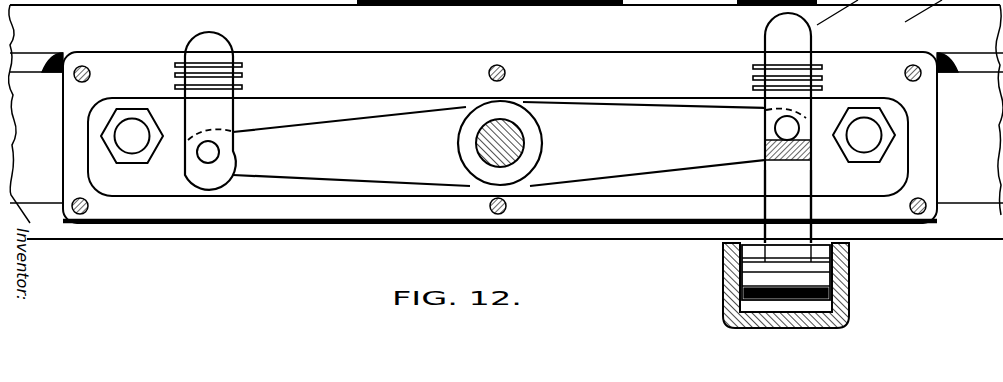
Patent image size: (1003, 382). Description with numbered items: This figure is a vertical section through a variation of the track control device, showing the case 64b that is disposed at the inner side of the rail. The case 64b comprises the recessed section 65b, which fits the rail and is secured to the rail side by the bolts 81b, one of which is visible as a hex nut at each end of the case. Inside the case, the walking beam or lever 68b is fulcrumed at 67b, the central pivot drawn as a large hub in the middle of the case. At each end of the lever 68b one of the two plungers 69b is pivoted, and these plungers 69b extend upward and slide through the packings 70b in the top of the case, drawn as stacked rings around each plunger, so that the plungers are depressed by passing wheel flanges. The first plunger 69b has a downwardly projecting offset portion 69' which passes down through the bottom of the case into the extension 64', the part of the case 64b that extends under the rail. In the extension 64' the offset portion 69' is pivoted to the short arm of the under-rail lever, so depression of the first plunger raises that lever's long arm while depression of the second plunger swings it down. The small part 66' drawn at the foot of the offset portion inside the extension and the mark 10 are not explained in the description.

The case 64b is at (394, 48).
The recessed section 65b is at (438, 70).
The fulcrum 67b is at (478, 141).
The walking beam or lever 68b is at (499, 144).
The plungers 69b is at (218, 50).
The packings 70b is at (243, 78).
The bolts 81b is at (870, 131).
The downwardly projecting offset portion 69' is at (761, 206).
The pin end piece 66' is at (745, 272).
The extension 64' is at (815, 285).
The base 10 is at (678, 323).